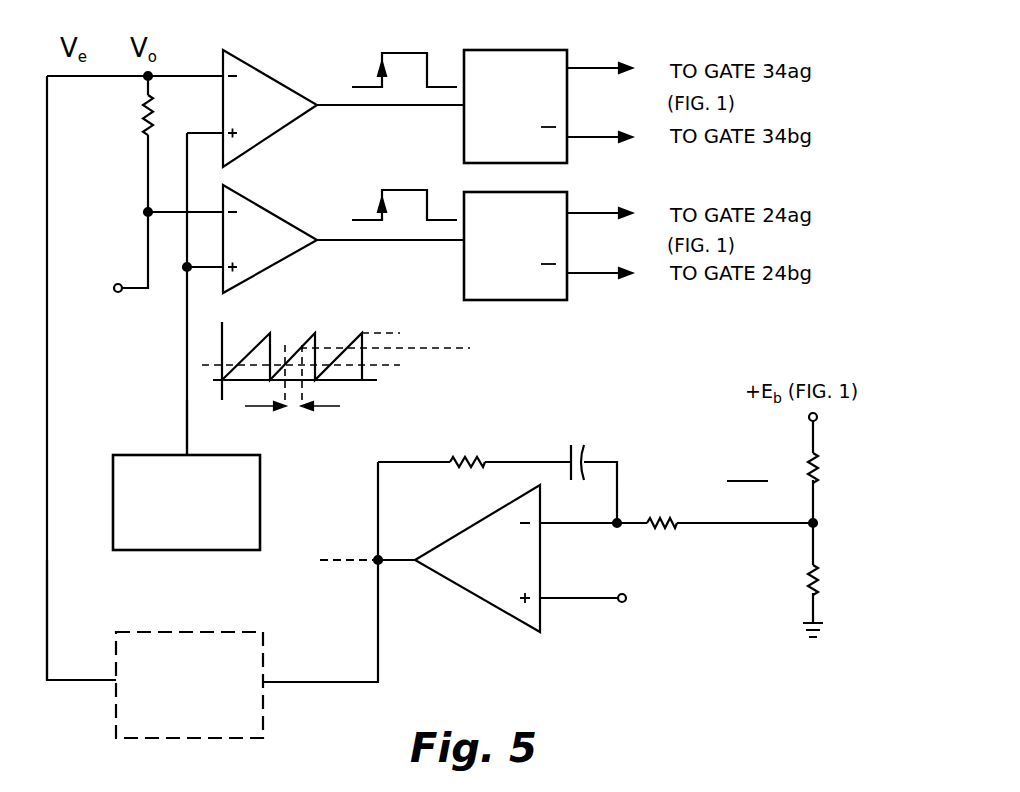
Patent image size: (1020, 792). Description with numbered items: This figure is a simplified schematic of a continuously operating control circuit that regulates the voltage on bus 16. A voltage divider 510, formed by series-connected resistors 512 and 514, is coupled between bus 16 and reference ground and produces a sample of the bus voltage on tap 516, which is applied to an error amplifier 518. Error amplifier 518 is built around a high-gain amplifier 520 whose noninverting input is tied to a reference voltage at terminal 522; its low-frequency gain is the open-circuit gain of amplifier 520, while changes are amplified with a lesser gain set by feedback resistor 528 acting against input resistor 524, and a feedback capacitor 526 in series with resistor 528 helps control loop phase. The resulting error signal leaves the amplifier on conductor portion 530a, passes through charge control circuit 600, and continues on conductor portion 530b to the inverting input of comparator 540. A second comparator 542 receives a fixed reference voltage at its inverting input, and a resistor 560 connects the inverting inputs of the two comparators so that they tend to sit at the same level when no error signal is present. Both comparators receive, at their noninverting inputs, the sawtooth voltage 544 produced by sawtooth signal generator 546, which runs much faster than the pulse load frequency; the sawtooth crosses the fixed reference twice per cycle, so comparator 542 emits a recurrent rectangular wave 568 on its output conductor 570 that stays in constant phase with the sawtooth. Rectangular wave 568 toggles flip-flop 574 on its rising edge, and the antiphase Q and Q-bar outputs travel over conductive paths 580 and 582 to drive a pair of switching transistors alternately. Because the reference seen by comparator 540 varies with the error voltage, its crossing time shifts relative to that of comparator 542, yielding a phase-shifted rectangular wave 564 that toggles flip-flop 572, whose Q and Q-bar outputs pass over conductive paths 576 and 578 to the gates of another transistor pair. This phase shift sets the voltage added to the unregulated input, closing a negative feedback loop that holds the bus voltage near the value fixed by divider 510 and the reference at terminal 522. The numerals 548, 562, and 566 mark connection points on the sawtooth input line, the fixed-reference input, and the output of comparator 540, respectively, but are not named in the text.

The bus 16 is at (817, 420).
The voltage divider 510 is at (737, 483).
The resistor 512 is at (818, 470).
The resistor 514 is at (818, 580).
The tap 516 is at (817, 525).
The error amplifier 518 is at (508, 587).
The high-gain amplifier 520 is at (490, 604).
The terminal 522 is at (626, 598).
The input resistor 524 is at (658, 521).
The feedback capacitor 526 is at (577, 442).
The feedback resistor 528 is at (462, 454).
The conductor portion 530a is at (378, 655).
The conductor portion 530b is at (47, 590).
The comparator 540 is at (279, 81).
The comparator 542 is at (287, 224).
The sawtooth voltage 544 is at (270, 338).
The sawtooth signal generator 546 is at (260, 500).
The sawtooth signal line 548 is at (187, 420).
The resistor 560 is at (117, 115).
The input terminal V1 562 is at (122, 292).
The phase-shifted rectangular wave 564 is at (405, 53).
The output line of COMP1 566 is at (378, 108).
The rectangular wave 568 is at (405, 190).
The output conductor 570 is at (405, 242).
The toggled flip-flop 572 is at (505, 50).
The toggled flip-flop 574 is at (560, 300).
The conductive path 576 is at (589, 66).
The conductive path 578 is at (589, 136).
The conductive path 580 is at (589, 213).
The conductive path 582 is at (589, 273).
The charge control circuit 600 is at (263, 720).